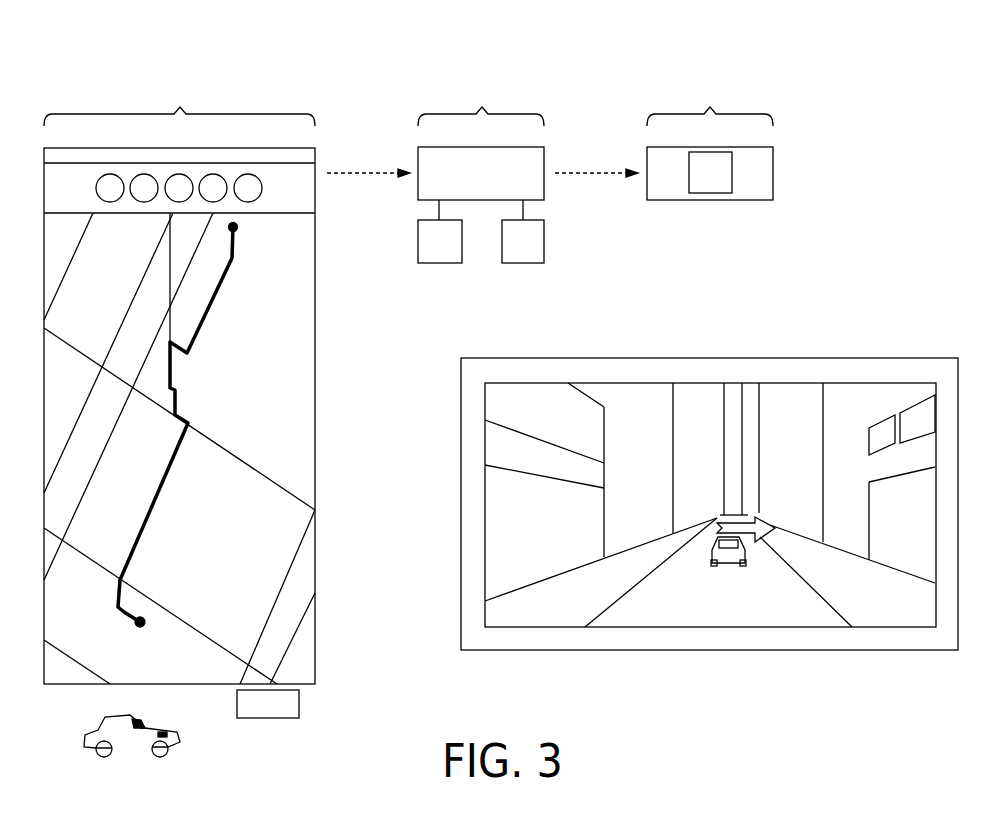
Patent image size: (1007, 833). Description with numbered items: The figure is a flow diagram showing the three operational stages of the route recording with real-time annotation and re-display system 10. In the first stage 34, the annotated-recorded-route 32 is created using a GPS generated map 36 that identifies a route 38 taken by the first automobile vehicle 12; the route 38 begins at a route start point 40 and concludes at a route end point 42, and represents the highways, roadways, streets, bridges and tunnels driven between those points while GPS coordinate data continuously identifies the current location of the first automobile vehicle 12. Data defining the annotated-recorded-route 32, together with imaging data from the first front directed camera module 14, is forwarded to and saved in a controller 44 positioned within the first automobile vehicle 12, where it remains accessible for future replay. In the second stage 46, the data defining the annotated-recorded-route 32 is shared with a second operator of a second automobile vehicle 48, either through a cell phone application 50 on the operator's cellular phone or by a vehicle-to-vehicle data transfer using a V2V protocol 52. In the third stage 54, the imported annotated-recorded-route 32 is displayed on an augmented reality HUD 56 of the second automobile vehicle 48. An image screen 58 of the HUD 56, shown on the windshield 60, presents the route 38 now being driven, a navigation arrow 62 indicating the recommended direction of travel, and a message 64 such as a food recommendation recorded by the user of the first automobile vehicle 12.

The route recording with real-time annotation and re-display system 10 is at (774, 79).
The first automobile vehicle 12 is at (112, 725).
The first front directed camera module 14 is at (138, 720).
The annotated-recorded-route 32 is at (697, 184).
The first stage 34 is at (179, 104).
The global positioning system (GPS) generated map 36 is at (287, 155).
The route 38 is at (152, 515).
The route start point 40 is at (147, 615).
The route end point 42 is at (237, 231).
The controller 44 is at (170, 738).
The second stage 46 is at (481, 104).
The second automobile vehicle 48 is at (468, 186).
The cell phone application 50 is at (427, 253).
The V2V protocol 52 is at (510, 253).
The third stage 54 is at (710, 141).
The augmented reality HUD 56 is at (739, 184).
The image screen 58 is at (868, 398).
The windshield 60 is at (473, 599).
The navigation arrow 62 is at (757, 523).
The message 64 is at (728, 613).